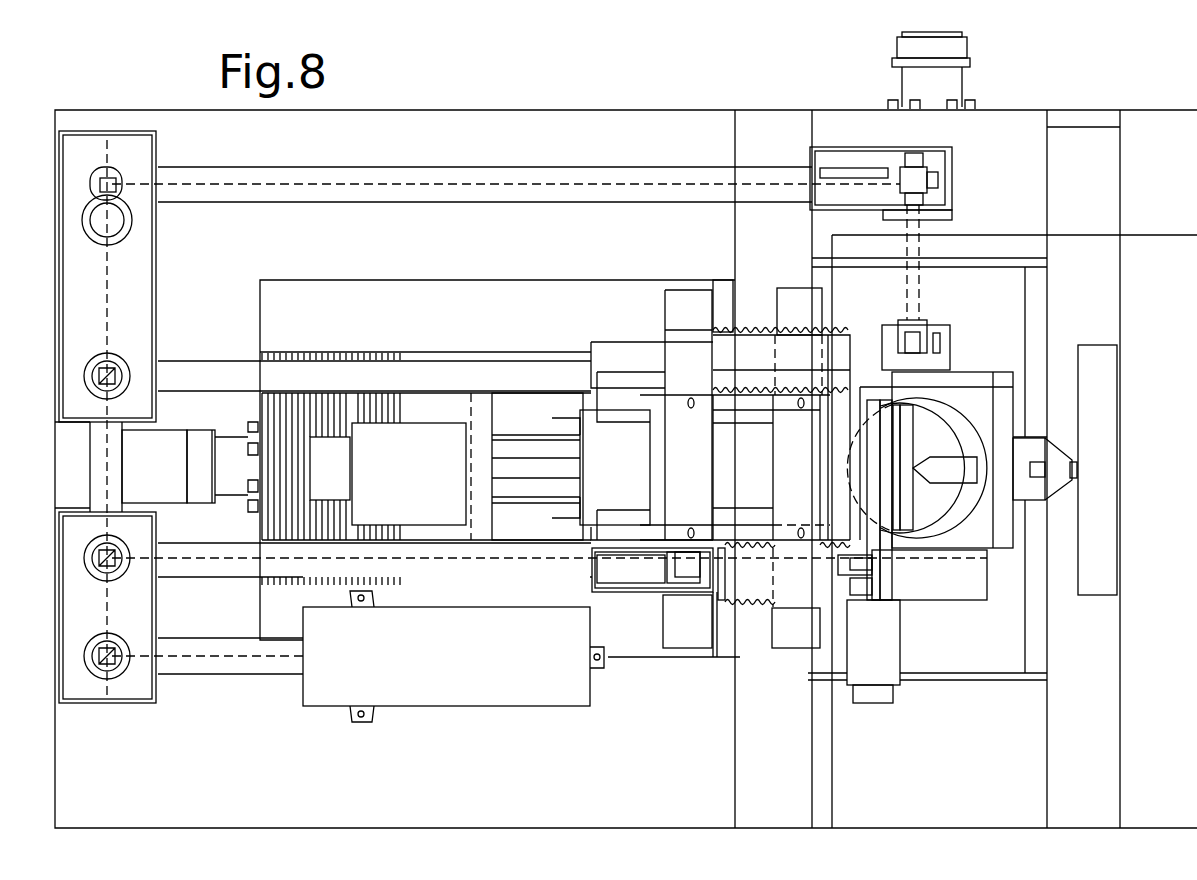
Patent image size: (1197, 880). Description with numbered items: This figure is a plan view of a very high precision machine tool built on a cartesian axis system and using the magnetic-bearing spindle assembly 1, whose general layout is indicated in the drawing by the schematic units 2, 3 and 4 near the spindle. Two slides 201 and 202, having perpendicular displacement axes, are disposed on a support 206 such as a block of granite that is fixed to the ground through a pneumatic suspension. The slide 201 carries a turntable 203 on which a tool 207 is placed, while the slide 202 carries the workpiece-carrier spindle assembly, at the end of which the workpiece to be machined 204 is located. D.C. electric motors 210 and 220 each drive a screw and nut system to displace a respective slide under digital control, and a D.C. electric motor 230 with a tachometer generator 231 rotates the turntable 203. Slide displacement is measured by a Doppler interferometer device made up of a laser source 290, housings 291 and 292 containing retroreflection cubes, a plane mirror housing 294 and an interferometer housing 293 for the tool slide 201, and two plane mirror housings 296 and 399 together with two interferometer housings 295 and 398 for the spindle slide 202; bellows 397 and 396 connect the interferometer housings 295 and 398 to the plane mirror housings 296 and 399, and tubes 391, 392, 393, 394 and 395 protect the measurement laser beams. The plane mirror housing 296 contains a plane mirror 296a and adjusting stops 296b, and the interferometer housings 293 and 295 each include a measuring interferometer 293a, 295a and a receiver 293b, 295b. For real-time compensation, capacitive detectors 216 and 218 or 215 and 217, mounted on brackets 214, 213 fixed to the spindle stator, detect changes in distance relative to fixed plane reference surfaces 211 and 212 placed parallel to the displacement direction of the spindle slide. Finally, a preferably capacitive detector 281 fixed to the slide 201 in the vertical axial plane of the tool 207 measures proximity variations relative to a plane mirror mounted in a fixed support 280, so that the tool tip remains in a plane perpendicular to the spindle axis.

The spindle assembly 1 is at (615, 467).
The second unit 2 is at (409, 474).
The third unit 3 is at (525, 405).
The fourth unit 4 is at (330, 468).
The slide 201 is at (1002, 672).
The slide 202 is at (447, 402).
The turntable 203 is at (956, 412).
The workpiece to be machined 204 is at (903, 515).
The support 206 is at (664, 125).
The tool 207 is at (920, 470).
The D.C. electric motor 210 is at (955, 34).
The fixed plane reference surface 211 is at (740, 516).
The fixed plane reference surface 212 is at (745, 410).
The bracket 213 is at (799, 465).
The bracket 214 is at (688, 415).
The capacitive type detector 215 is at (801, 527).
The capacitive type detector 216 is at (691, 527).
The capacitive type detector 217 is at (801, 408).
The capacitive type detector 218 is at (691, 397).
The D.C. electric motor 220 is at (162, 492).
The D.C. electric motor 230 is at (888, 688).
The tachometer generator 231 is at (866, 705).
The fixed support 280 is at (1097, 595).
The detector 281 is at (1078, 471).
The laser source 290 is at (467, 707).
The housing containing retroreflection cubes 291 is at (128, 705).
The housing containing retroreflection cubes 292 is at (156, 270).
The interferometer housing 293 is at (952, 185).
The measuring interferometer 293a is at (916, 175).
The receiver 293b is at (832, 168).
The plane mirror housing 294 is at (955, 325).
The interferometer housing 295 is at (657, 596).
The measuring interferometer 295a is at (690, 575).
The receiver 295b is at (622, 582).
The plane mirror housing 296 is at (888, 587).
The plane mirror 296a is at (838, 590).
The adjusting stops 296b is at (864, 566).
The tube 391 is at (252, 676).
The tube 392 is at (207, 577).
The tube 393 is at (117, 470).
The tube 394 is at (204, 366).
The tube 395 is at (412, 172).
The bellows 396 is at (758, 328).
The bellows 397 is at (753, 620).
The interferometer housing 398 is at (598, 342).
The plane mirror housing 399 is at (862, 335).